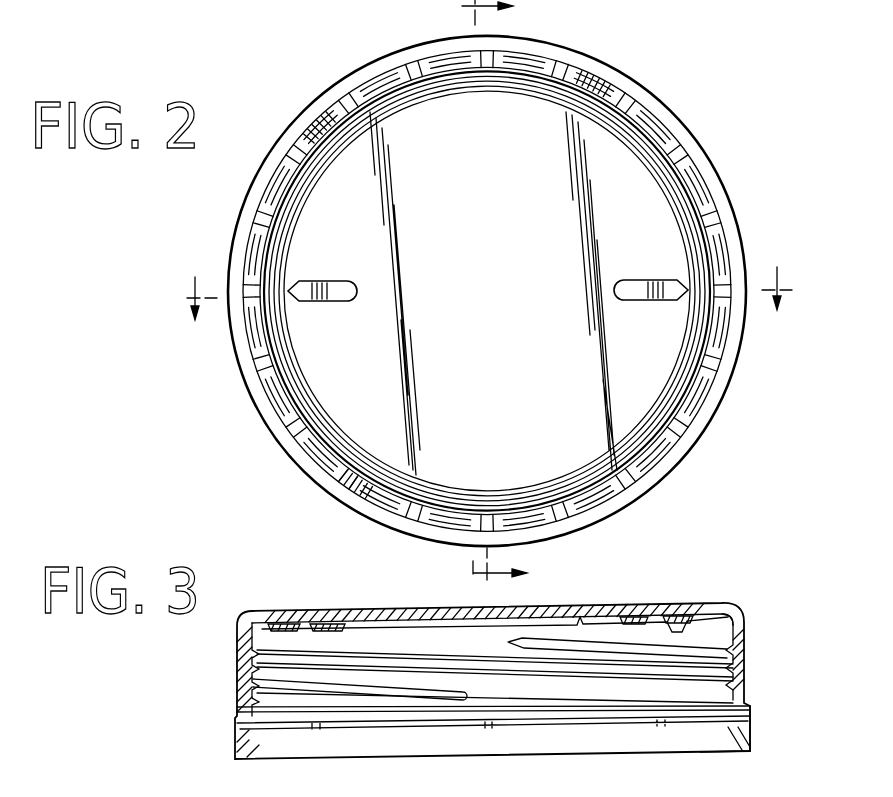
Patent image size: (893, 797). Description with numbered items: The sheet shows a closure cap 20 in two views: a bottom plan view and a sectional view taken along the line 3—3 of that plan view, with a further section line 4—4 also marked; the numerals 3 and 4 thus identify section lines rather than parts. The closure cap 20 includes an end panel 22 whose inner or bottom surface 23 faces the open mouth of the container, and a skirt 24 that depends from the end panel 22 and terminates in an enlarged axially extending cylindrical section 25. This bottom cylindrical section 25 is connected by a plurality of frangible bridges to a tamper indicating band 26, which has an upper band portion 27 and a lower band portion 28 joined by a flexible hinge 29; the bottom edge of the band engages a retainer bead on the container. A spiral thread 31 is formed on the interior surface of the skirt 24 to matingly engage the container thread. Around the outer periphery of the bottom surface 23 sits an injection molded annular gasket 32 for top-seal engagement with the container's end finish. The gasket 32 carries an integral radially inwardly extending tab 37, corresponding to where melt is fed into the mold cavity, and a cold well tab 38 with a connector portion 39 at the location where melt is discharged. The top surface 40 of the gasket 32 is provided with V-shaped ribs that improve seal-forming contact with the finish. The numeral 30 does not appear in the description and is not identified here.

In FIG. 2, the closure cap 20 is at (748, 195).
In FIG. 3, the closure cap 20 is at (756, 613).
In FIG. 3, the end panel 22 is at (298, 760).
In FIG. 2, the inner or bottom surface 23 is at (495, 198).
In FIG. 3, the inner or bottom surface 23 is at (635, 796).
In FIG. 3, the skirt 24 is at (746, 658).
In FIG. 3, the enlarged axially extending cylindrical section 25 is at (750, 712).
In FIG. 3, the tamper indicating band 26 is at (752, 735).
In FIG. 3, the upper band portion 27 is at (752, 746).
In FIG. 3, the lower band portion 28 is at (256, 742).
In FIG. 3, the flexible hinge 29 is at (742, 744).
In FIG. 3, the frangible bridges 30 is at (237, 727).
In FIG. 3, the spiral thread 31 is at (748, 645).
In FIG. 2, the injection molded annular gasket 32 is at (648, 152).
In FIG. 3, the injection molded annular gasket 32 is at (700, 604).
In FIG. 2, the radially inwardly extending tab 37 is at (641, 301).
In FIG. 2, the cold well tab 38 is at (310, 280).
In FIG. 3, the cold well tab 38 is at (336, 632).
In FIG. 2, the connector portion 39 is at (293, 303).
In FIG. 3, the connector portion 39 is at (300, 630).
In FIG. 2, the top surface of gasket 40 is at (668, 380).
In FIG. 3, the top surface of gasket 40 is at (724, 601).
In FIG. 2, the section line 3- 3 is at (485, 286).
In FIG. 2, the section line 4- 4 is at (484, 290).